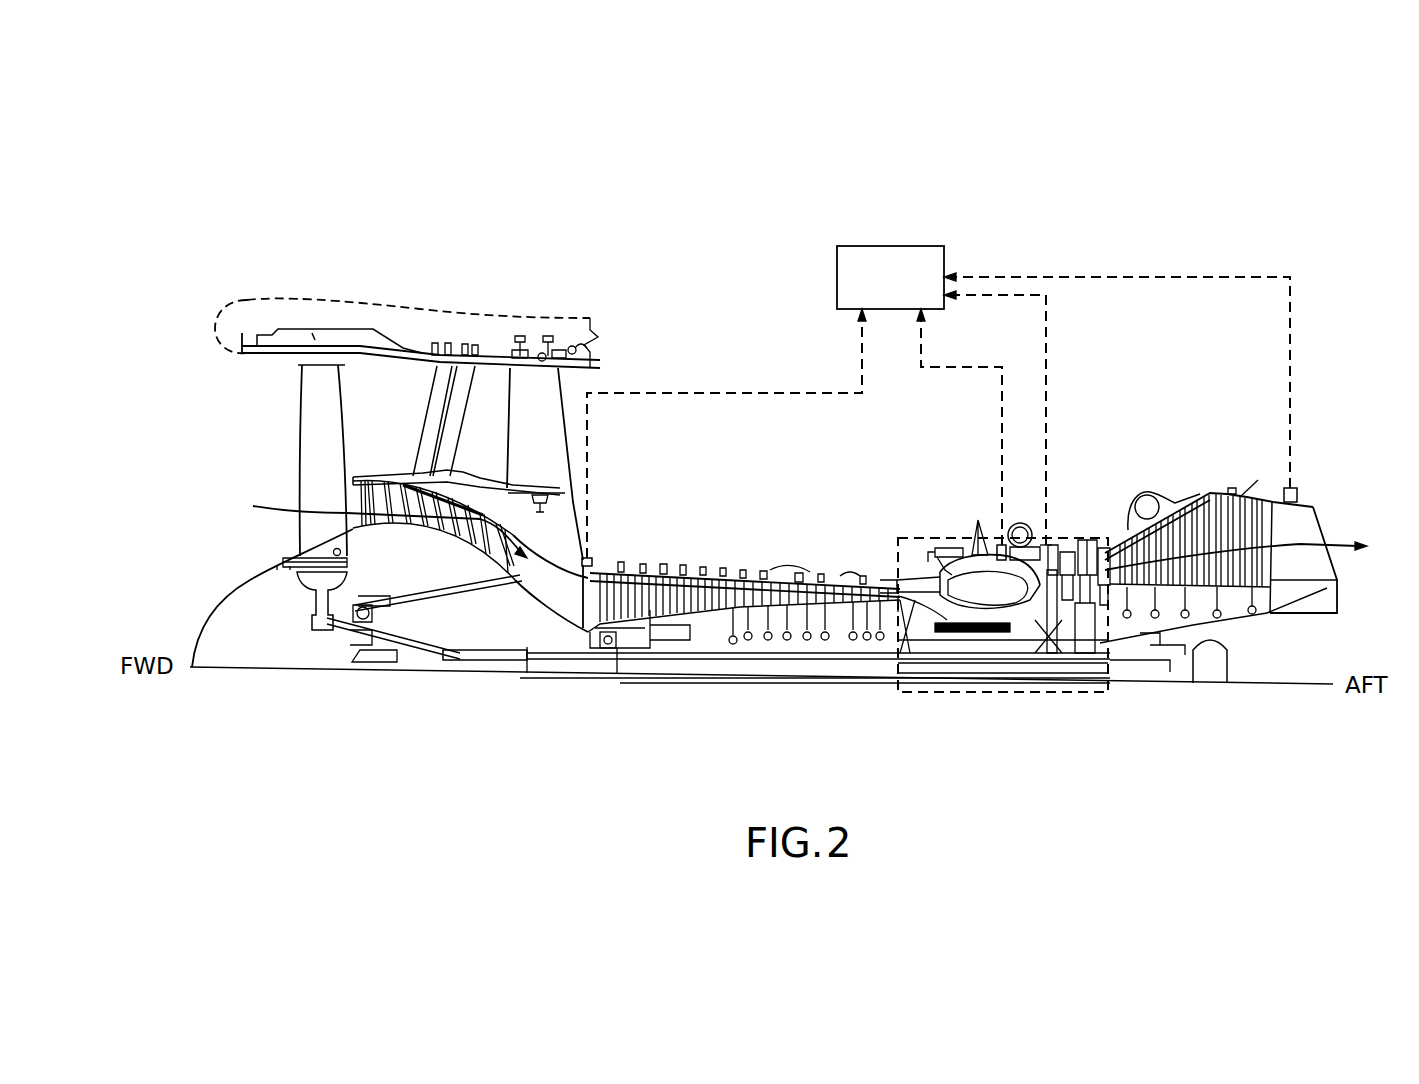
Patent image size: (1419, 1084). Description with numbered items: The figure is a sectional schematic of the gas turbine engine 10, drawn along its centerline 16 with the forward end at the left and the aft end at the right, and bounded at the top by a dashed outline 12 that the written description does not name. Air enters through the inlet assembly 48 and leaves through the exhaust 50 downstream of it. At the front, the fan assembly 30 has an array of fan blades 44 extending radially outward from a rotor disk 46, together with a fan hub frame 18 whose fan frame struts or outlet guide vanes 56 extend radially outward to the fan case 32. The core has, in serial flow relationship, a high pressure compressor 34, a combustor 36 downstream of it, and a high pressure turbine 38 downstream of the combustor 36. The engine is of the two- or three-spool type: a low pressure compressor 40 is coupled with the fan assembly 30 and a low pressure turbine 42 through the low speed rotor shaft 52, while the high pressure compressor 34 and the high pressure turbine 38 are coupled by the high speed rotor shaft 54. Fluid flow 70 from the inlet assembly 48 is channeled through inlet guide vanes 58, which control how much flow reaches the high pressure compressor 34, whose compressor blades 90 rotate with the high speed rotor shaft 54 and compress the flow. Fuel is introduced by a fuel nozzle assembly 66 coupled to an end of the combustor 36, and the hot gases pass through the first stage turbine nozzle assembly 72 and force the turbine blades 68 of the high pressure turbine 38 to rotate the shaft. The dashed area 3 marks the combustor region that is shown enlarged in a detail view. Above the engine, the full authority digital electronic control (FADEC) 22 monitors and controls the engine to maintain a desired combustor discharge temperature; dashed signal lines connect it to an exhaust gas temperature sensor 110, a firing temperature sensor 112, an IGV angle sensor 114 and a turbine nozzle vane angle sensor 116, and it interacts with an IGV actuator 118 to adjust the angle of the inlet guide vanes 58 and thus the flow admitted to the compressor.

The area 3 is at (1003, 692).
The gas turbine engine 10 is at (968, 188).
The nacelle 12 is at (252, 297).
The centerline 16 is at (1247, 684).
The fan hub frame 18 is at (572, 492).
The full authority digital electronic control (FADEC) 22 is at (890, 246).
The fan assembly 30 is at (272, 390).
The fan case 32 is at (418, 350).
The high pressure compressor 34 is at (750, 540).
The combustor 36 is at (978, 530).
The high pressure turbine 38 is at (1082, 518).
The low pressure compressor 40 is at (478, 488).
The low pressure turbine 42 is at (1126, 489).
The fan blades 44 is at (300, 462).
The rotor disk 46 is at (317, 597).
The inlet assembly 48 is at (196, 509).
The exhaust 50 is at (1302, 628).
The low speed rotor shaft 52 is at (490, 665).
The high speed rotor shaft 54 is at (783, 655).
The fan frame struts or outlet guide vanes 56 is at (565, 395).
The inlet guide vanes (IGVs) 58 is at (612, 600).
The fuel nozzle assembly 66 is at (937, 548).
The turbine blades 68 is at (1061, 545).
The fluid flow 70 is at (253, 507).
The first stage turbine nozzle assembly 72 is at (1040, 526).
The compressor blades 90 is at (607, 648).
The exhaust gas temperature sensor 110 is at (1295, 488).
The firing temperature sensor 112 is at (1002, 402).
The IGV angle sensor 114 is at (760, 393).
The turbine nozzle vane angle sensor 116 is at (1046, 398).
The IGV actuator 118 is at (590, 558).